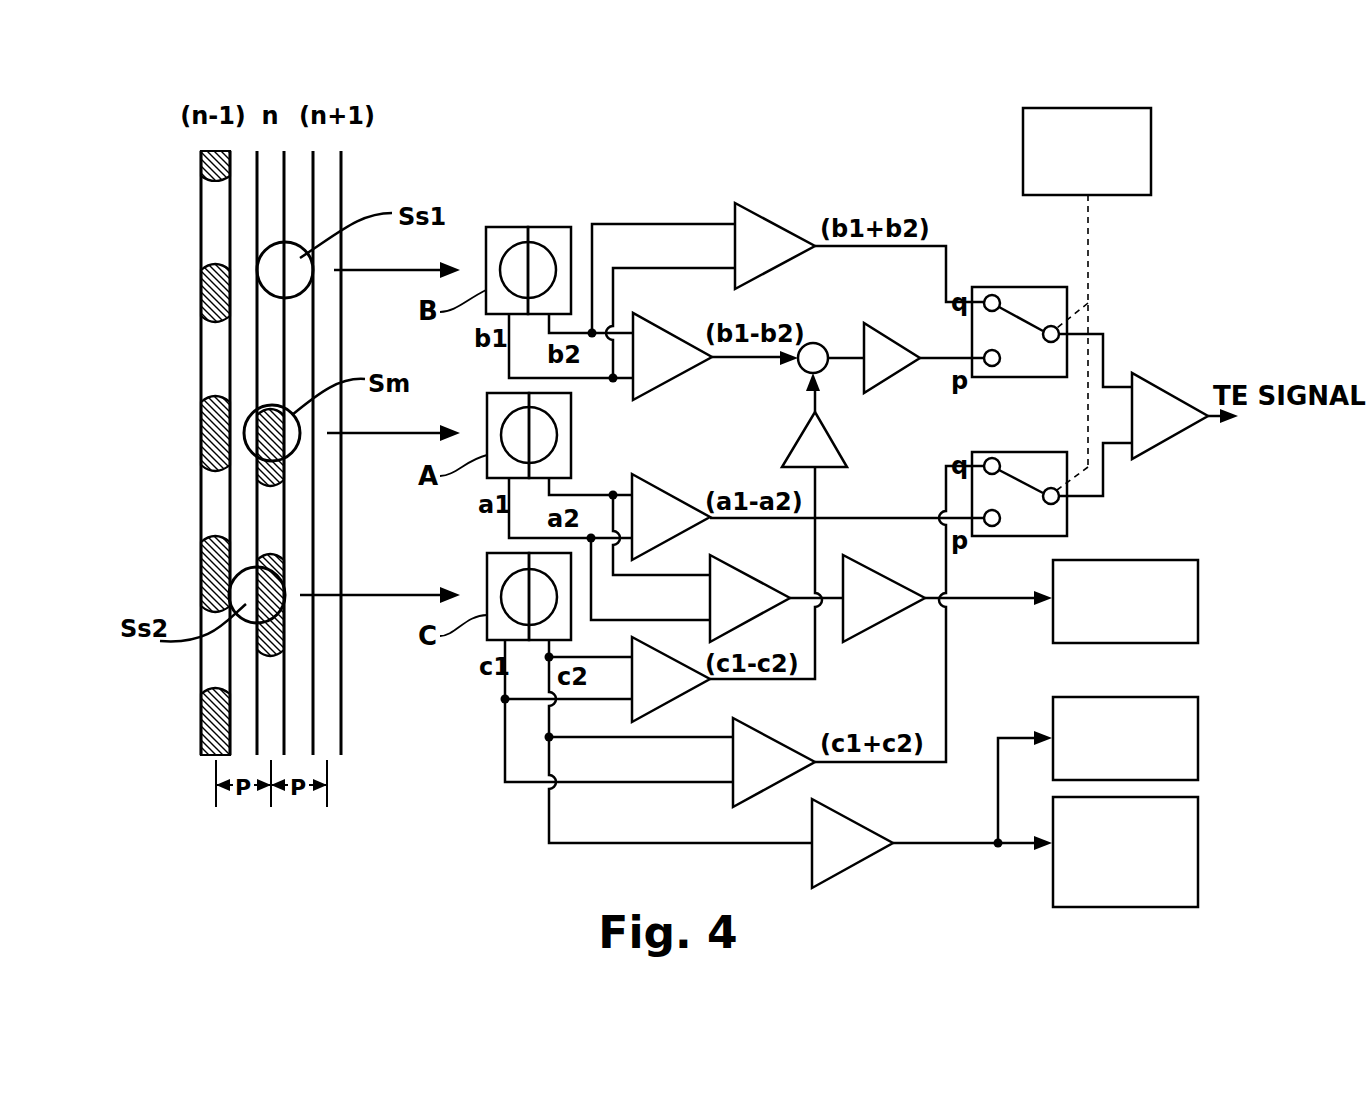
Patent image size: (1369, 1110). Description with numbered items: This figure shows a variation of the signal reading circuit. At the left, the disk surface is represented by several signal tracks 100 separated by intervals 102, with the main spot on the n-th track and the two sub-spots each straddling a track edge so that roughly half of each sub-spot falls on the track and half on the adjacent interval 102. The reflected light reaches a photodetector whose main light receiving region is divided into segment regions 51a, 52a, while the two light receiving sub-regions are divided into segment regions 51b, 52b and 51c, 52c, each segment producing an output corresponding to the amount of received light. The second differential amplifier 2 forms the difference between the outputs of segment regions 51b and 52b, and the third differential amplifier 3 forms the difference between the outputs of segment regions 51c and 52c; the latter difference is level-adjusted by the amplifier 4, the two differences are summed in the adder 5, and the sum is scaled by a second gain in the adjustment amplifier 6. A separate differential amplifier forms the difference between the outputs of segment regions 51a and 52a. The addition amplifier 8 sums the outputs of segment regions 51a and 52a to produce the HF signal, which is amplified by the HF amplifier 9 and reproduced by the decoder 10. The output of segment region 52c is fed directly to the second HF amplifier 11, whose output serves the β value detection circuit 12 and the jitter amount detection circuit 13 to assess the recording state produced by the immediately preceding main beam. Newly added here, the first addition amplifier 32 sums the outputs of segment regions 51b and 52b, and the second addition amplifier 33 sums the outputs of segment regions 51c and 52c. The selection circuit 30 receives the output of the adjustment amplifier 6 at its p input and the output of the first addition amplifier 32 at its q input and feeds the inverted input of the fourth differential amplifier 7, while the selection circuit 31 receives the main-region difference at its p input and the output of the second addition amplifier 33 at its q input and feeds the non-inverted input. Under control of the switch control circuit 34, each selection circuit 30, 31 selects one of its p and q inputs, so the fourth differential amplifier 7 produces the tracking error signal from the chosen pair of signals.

The second differential amplifier 2 is at (674, 335).
The third differential amplifier 3 is at (683, 695).
The amplifier 4 is at (797, 442).
The adder 5 is at (822, 345).
The adjustment amplifier 6 is at (890, 384).
The fourth differential amplifier 7 is at (1171, 393).
The addition amplifier 8 is at (745, 574).
The HF amplifier 9 is at (888, 620).
The decoder 10 is at (1140, 645).
The second HF amplifier 11 is at (855, 822).
The β value detection circuit 12 is at (1198, 745).
The jitter amount detection circuit 13 is at (1198, 843).
The selection circuit 30 is at (1020, 287).
The selection circuit 31 is at (1020, 452).
The first addition amplifier 32 is at (775, 218).
The second addition amplifier 33 is at (790, 749).
The switch control circuit 34 is at (1090, 108).
The segment region 51a is at (487, 420).
The segment region 51b is at (505, 240).
The segment region 51c is at (487, 585).
The segment region 52a is at (571, 410).
The segment region 52b is at (551, 238).
The segment region 52c is at (571, 625).
The signal track 100 is at (332, 755).
The interval 102 is at (308, 755).